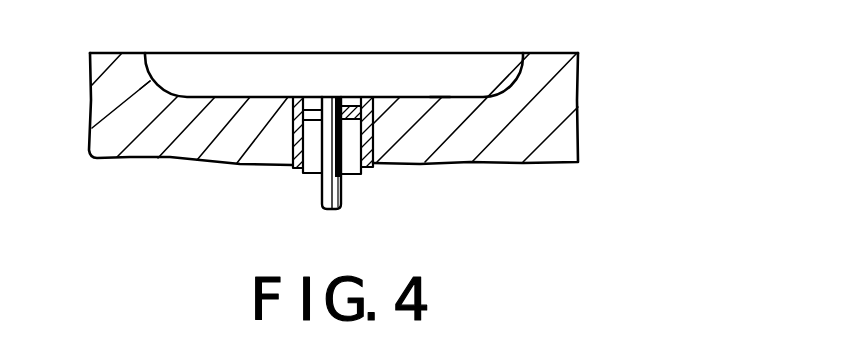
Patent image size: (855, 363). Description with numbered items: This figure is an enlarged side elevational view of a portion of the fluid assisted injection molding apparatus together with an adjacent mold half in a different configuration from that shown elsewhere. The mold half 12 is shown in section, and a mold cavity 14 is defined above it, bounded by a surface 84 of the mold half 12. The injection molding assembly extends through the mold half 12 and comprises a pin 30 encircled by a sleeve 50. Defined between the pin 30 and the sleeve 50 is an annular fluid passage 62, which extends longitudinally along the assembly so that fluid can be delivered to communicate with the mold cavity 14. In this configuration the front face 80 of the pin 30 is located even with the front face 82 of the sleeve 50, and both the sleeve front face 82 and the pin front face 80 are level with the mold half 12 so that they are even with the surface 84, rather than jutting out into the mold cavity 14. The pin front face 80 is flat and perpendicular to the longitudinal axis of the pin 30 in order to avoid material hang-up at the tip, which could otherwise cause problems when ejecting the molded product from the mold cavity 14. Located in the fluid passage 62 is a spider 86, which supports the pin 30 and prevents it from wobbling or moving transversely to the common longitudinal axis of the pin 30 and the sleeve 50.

The second mold half 12 is at (550, 106).
The mold cavity 14 is at (150, 81).
The pin 30 is at (346, 192).
The sleeve 50 is at (297, 170).
The annular fluid passage 62 is at (316, 162).
The pin front face 80 is at (333, 97).
The sleeve front face 82 is at (298, 97).
The surface of the mold half 84 is at (440, 97).
The spider 86 is at (370, 97).